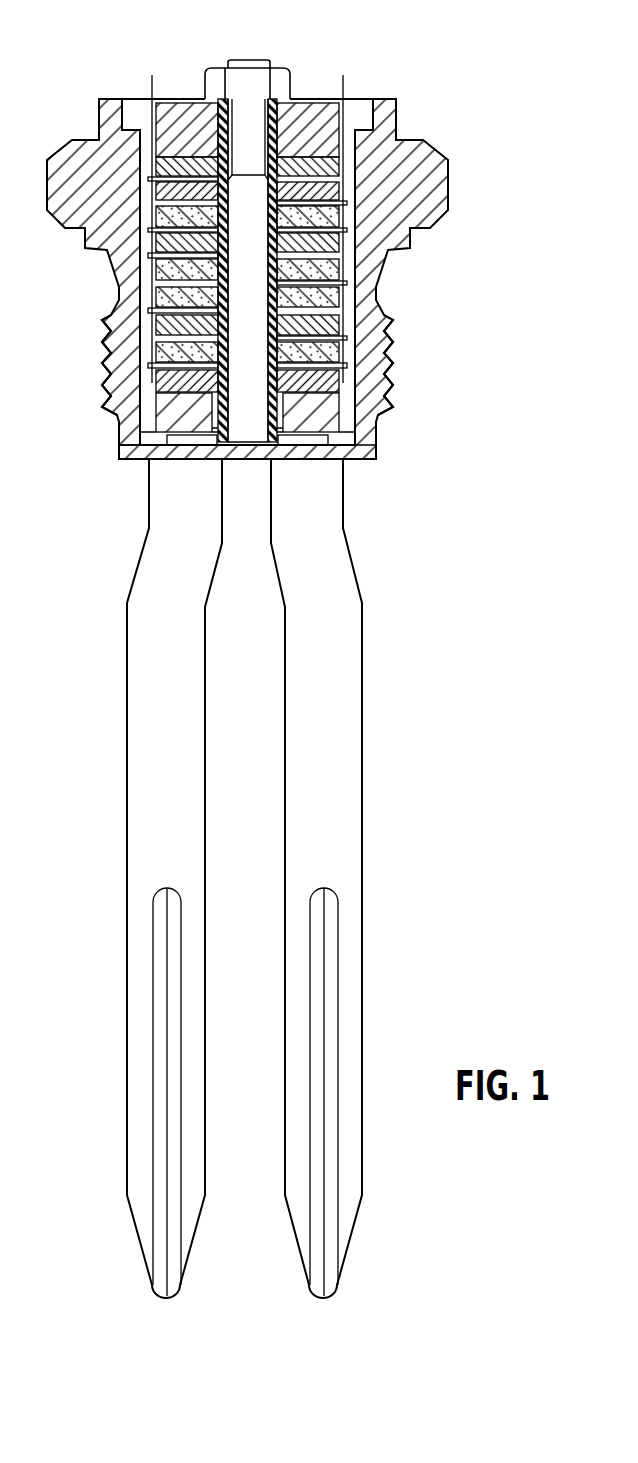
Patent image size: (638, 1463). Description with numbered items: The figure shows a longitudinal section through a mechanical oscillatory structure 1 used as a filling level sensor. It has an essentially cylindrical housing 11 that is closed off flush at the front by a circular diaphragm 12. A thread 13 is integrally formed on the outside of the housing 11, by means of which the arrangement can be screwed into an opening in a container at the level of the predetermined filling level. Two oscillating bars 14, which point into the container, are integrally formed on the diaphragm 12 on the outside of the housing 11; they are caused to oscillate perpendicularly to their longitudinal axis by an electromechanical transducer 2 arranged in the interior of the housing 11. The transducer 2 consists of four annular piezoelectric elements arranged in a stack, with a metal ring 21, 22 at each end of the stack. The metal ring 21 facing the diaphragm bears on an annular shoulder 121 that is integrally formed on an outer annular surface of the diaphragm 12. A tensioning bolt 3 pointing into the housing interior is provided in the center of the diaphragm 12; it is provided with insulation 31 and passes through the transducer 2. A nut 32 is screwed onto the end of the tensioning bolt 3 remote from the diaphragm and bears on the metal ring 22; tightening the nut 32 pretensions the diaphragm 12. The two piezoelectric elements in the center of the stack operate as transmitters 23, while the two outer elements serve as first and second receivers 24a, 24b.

The mechanical oscillatory structure 1 is at (297, 652).
The electromechanical transducer 2 is at (265, 224).
The tensioning bolt 3 is at (250, 200).
The housing 11 is at (427, 181).
The diaphragm 12 is at (243, 449).
The annular shoulder 121 is at (147, 441).
The thread 13 is at (385, 362).
The oscillating bars 14 is at (152, 766).
The metal ring 21 is at (173, 412).
The metal ring 22 is at (180, 118).
The transmitters 23 is at (158, 290).
The first receiver 24a is at (411, 237).
The second receiver 24b is at (343, 345).
The insulation 31 is at (273, 400).
The nut 32 is at (237, 83).